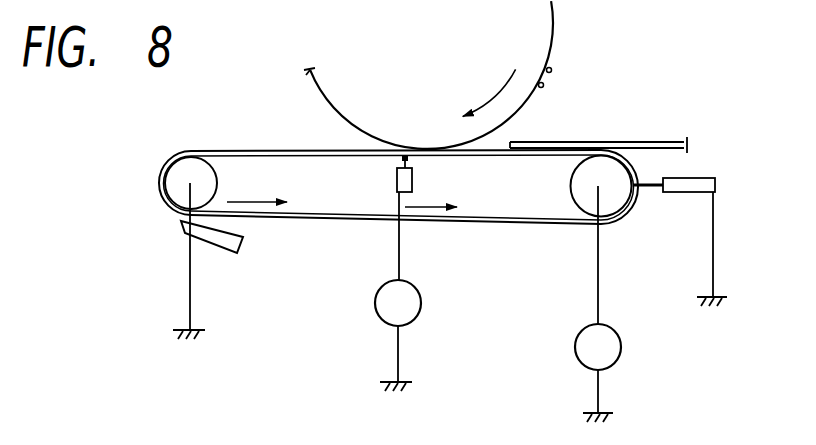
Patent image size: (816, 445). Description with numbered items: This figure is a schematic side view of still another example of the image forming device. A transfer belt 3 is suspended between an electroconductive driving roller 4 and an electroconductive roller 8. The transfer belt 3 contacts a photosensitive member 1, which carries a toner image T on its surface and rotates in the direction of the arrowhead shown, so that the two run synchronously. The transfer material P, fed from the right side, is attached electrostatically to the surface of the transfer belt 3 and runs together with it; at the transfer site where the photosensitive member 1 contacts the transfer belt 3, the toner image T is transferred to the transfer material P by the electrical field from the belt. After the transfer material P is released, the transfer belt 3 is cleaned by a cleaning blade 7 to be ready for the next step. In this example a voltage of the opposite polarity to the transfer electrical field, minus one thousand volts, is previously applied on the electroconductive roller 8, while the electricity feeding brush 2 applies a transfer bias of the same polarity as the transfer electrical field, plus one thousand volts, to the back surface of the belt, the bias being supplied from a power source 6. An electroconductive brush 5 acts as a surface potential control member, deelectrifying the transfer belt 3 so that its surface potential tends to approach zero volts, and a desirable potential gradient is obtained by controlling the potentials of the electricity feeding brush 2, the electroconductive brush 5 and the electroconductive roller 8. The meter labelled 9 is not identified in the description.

The photosensitive member 1 is at (547, 20).
The toner image T is at (551, 70).
The transfer material P is at (661, 141).
The electricity feeding brush 2 is at (412, 173).
The transfer belt 3 is at (473, 224).
The electroconductive driving roller 4 is at (208, 172).
The electroconductive brush 5 is at (716, 184).
The power source 6 is at (421, 303).
The cleaning blade 7 is at (225, 247).
The electroconductive roller 8 is at (622, 204).
The voltage source V1 9 is at (621, 346).